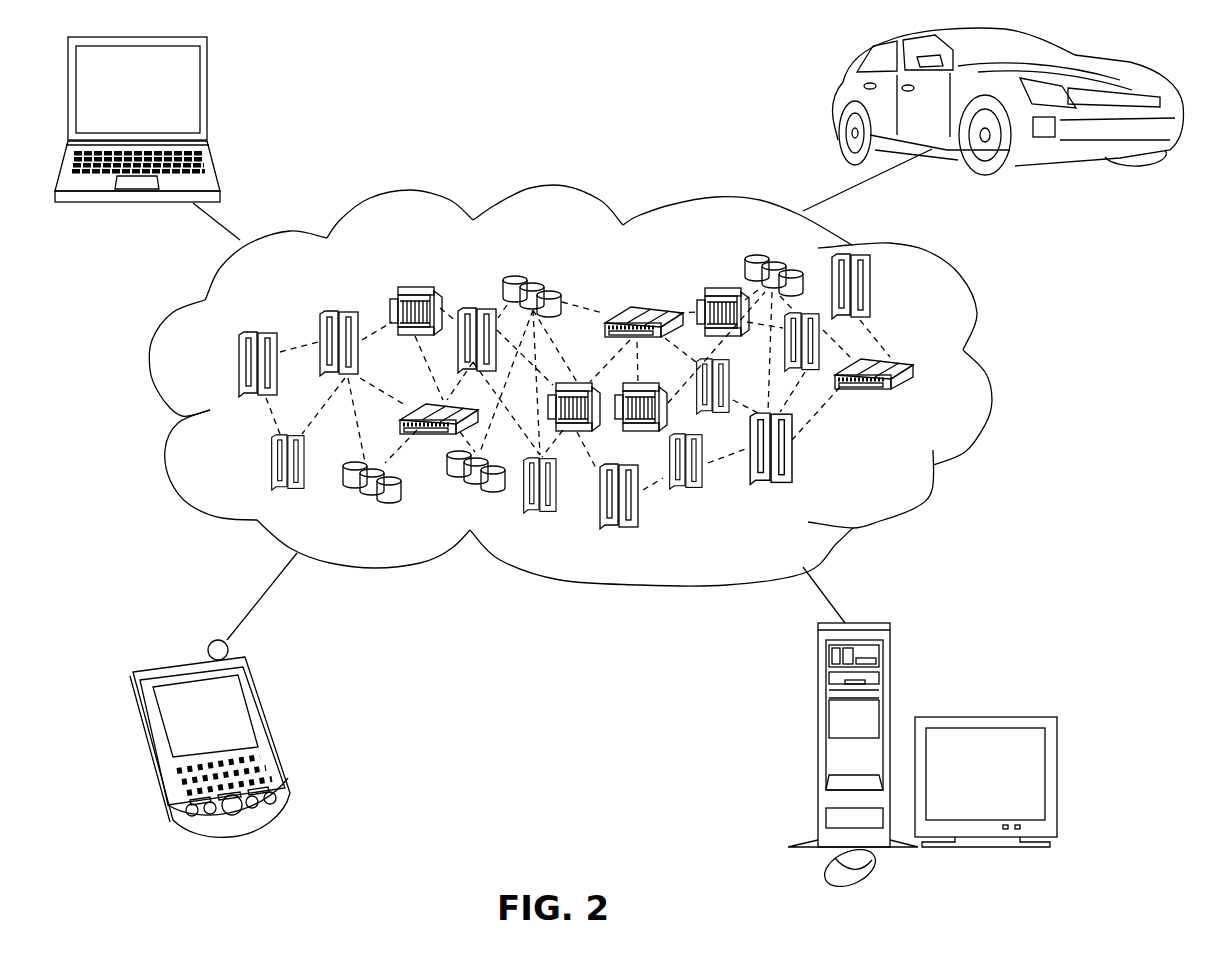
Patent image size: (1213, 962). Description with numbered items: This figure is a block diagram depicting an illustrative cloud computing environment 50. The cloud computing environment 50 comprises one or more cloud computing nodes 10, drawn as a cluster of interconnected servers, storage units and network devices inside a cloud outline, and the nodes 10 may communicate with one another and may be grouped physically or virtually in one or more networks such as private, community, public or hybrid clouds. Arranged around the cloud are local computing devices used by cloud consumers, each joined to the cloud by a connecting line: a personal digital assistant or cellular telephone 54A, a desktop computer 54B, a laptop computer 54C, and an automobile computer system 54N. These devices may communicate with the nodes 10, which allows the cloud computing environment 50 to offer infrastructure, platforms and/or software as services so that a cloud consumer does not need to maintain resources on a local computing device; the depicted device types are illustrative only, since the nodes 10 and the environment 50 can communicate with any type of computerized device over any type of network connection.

The cloud computing node 10 is at (902, 482).
The cloud computing environment 50 is at (983, 377).
The personal digital assistant or cellular telephone 54A is at (262, 696).
The desktop computer 54B is at (818, 682).
The laptop computer 54C is at (206, 76).
The automobile computer system 54N is at (838, 86).